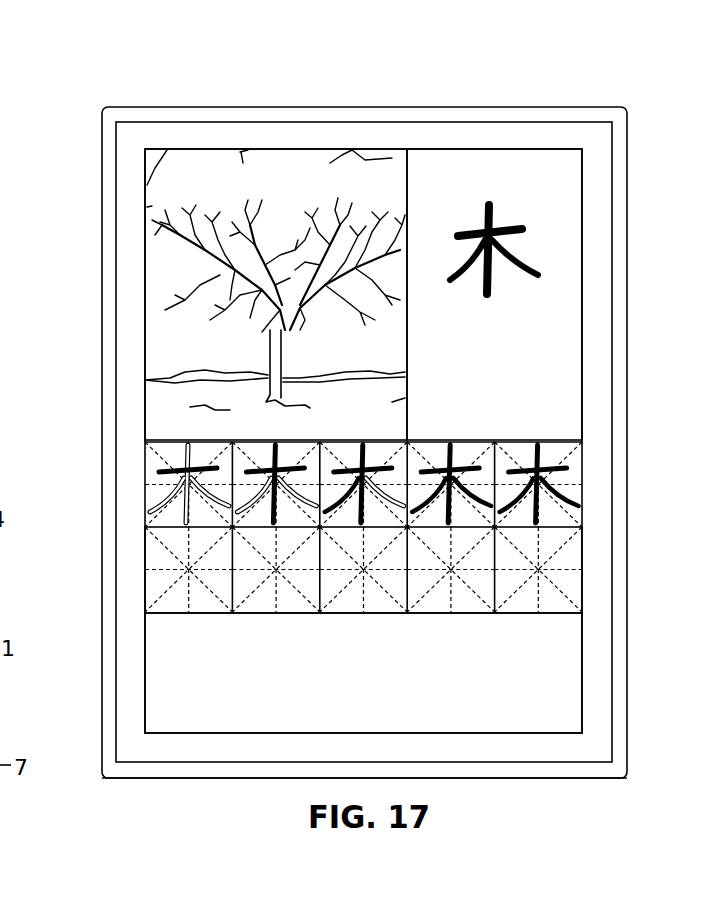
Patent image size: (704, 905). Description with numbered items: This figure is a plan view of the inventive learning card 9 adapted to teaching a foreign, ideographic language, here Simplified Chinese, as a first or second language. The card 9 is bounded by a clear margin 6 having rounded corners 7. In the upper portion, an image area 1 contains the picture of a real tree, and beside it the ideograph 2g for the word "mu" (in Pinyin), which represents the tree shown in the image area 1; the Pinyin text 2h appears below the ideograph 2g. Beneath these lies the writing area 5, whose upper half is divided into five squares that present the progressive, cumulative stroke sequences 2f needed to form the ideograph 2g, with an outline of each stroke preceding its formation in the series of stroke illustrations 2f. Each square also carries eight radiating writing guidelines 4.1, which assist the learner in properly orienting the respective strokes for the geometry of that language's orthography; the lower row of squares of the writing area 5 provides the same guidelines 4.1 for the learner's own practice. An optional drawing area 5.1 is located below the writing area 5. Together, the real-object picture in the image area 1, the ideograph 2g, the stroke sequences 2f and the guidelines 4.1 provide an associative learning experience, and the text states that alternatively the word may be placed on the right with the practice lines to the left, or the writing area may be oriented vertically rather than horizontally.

The learning card 9 is at (95, 130).
The image area 1 is at (148, 207).
The clear margin 6 is at (109, 302).
The rounded corners 7 is at (626, 778).
The ideograph 2g is at (538, 272).
The pinyin pronunciation display area 2h is at (520, 378).
The strokes 2f is at (146, 455).
The writing area 5 is at (373, 570).
The radiating writing guidelines 4.1 is at (560, 548).
The drawing area 5.1 is at (157, 652).